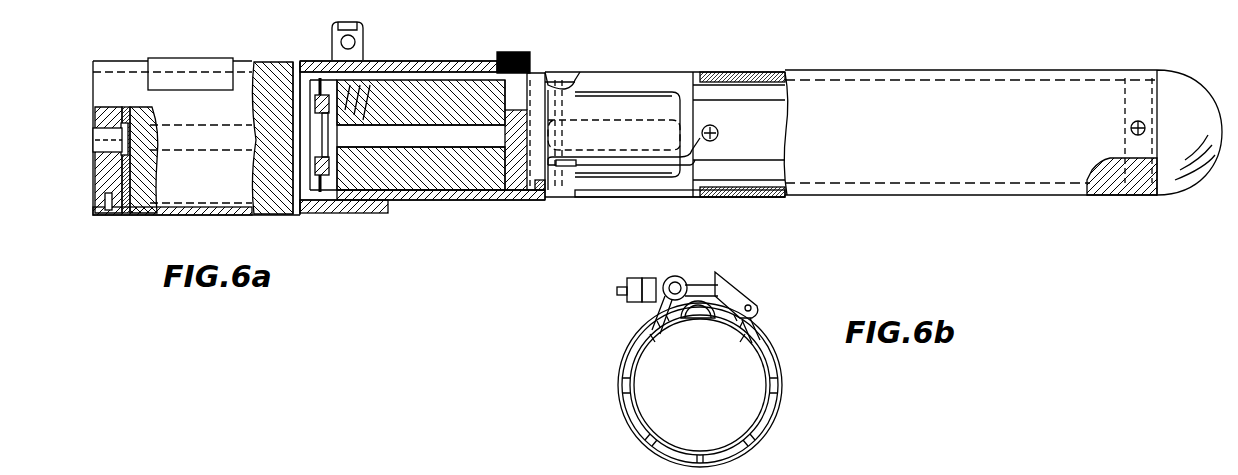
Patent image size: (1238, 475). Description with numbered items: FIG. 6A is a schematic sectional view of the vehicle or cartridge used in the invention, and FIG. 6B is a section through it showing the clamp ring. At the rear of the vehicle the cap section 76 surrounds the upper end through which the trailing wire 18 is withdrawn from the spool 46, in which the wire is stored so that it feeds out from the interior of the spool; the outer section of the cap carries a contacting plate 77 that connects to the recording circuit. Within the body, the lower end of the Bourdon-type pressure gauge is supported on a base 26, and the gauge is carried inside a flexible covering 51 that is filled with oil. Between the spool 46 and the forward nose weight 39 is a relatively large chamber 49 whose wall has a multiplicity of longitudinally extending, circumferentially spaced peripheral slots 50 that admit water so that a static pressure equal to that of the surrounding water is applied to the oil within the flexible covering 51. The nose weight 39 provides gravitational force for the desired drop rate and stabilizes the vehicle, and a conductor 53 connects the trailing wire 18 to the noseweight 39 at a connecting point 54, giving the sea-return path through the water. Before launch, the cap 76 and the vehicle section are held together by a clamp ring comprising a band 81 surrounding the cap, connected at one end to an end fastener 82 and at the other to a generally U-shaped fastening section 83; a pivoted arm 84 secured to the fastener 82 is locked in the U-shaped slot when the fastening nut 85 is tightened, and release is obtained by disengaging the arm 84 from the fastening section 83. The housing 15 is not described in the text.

In FIG. 6A, the housing 15 is at (205, 210).
In FIG. 6A, the contacting plate 77 is at (82, 130).
In FIG. 6A, the cap section 76 is at (262, 60).
In FIG. 6B, the cap section 76 is at (620, 400).
In FIG. 6A, the trailing wire 18 is at (430, 200).
In FIG. 6A, the band 81 is at (360, 213).
In FIG. 6B, the band 81 is at (750, 450).
In FIG. 6A, the U-shaped fastening section 83 is at (363, 50).
In FIG. 6B, the U-shaped fastening section 83 is at (652, 318).
In FIG. 6A, the fastening nut 85 is at (350, 35).
In FIG. 6B, the fastening nut 85 is at (622, 298).
In FIG. 6A, the spool 46 is at (478, 175).
In FIG. 6A, the base 26 is at (520, 175).
In FIG. 6A, the peripheral slots 50 is at (647, 48).
In FIG. 6A, the flexible covering 51 is at (680, 100).
In FIG. 6A, the conductor 53 is at (665, 160).
In FIG. 6A, the connecting point 54 is at (716, 138).
In FIG. 6A, the chamber 49 is at (897, 50).
In FIG. 6B, the chamber 49 is at (770, 387).
In FIG. 6A, the nose weight 39 is at (1188, 190).
In FIG. 6B, the pivoted arm 84 is at (740, 258).
In FIG. 6B, the end fastener 82 is at (760, 305).